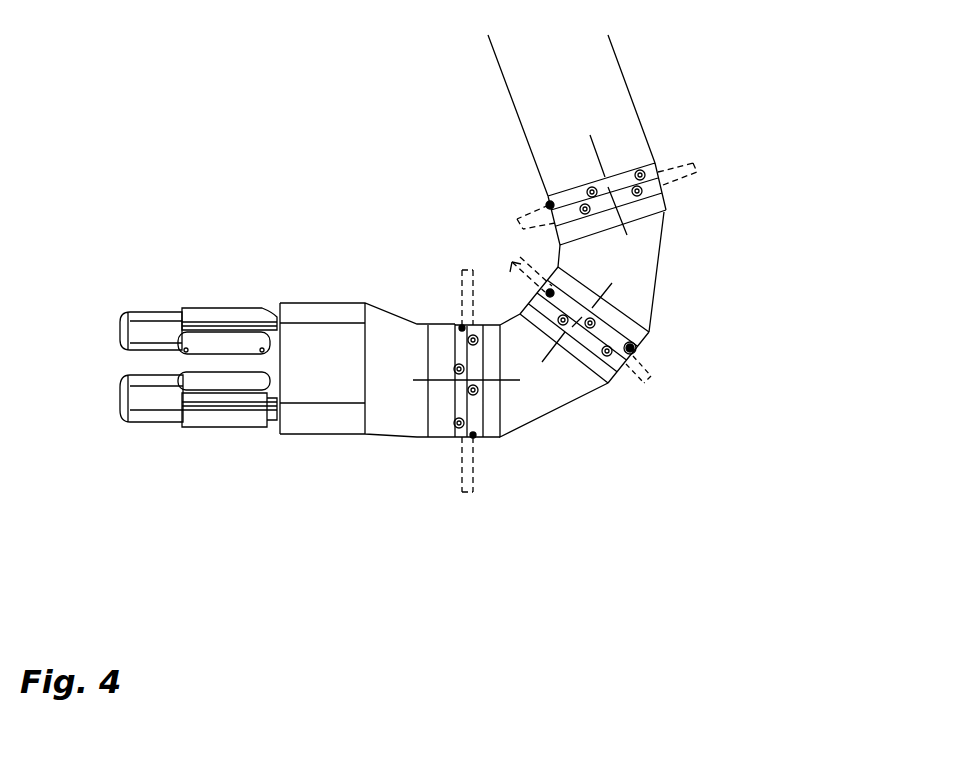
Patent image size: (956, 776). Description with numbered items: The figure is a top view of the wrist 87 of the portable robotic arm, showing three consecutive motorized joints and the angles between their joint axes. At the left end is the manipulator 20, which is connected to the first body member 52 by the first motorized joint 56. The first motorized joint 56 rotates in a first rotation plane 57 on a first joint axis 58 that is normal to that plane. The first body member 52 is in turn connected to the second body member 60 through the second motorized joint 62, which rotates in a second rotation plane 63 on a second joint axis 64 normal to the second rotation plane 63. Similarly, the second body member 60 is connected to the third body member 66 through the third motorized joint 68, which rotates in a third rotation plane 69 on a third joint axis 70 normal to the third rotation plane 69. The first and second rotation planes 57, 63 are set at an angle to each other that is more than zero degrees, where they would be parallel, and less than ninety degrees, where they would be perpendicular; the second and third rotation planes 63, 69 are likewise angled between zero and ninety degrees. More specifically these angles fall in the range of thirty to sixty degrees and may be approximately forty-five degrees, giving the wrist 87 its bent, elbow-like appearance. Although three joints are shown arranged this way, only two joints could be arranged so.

The manipulator 20 is at (328, 345).
The first body member 52 is at (543, 408).
The first motorized joint 56 is at (455, 438).
The first rotation plane 57 is at (458, 281).
The first joint axis 58 is at (492, 326).
The second body member 60 is at (643, 245).
The second motorized joint 62 is at (634, 347).
The second rotation plane 63 is at (650, 377).
The second joint axis 64 is at (611, 284).
The third body member 66 is at (597, 70).
The third motorized joint 68 is at (652, 163).
The third rotation plane 69 is at (520, 220).
The third joint axis 70 is at (595, 148).
The wrist 87 is at (647, 440).